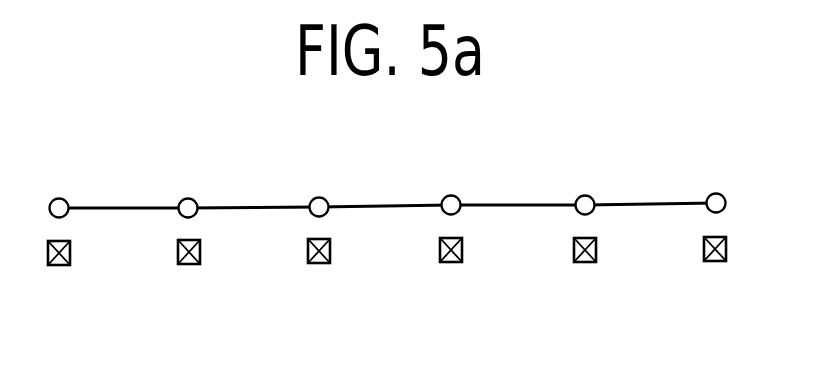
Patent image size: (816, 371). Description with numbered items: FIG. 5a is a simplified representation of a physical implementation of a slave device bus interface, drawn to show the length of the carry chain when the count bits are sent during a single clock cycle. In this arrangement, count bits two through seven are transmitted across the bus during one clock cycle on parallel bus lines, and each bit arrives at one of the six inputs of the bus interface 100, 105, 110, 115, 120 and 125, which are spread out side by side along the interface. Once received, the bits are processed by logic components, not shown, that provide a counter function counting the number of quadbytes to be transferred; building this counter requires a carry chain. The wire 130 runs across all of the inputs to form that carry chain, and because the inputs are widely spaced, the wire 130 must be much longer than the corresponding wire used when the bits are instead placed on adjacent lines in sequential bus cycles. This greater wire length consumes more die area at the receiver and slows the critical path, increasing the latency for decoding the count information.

The bus interface input 100 is at (58, 267).
The bus interface input 105 is at (188, 266).
The bus interface input 110 is at (318, 265).
The bus interface input 115 is at (451, 264).
The bus interface input 120 is at (585, 264).
The bus interface input 125 is at (715, 263).
The wire 130 is at (389, 205).